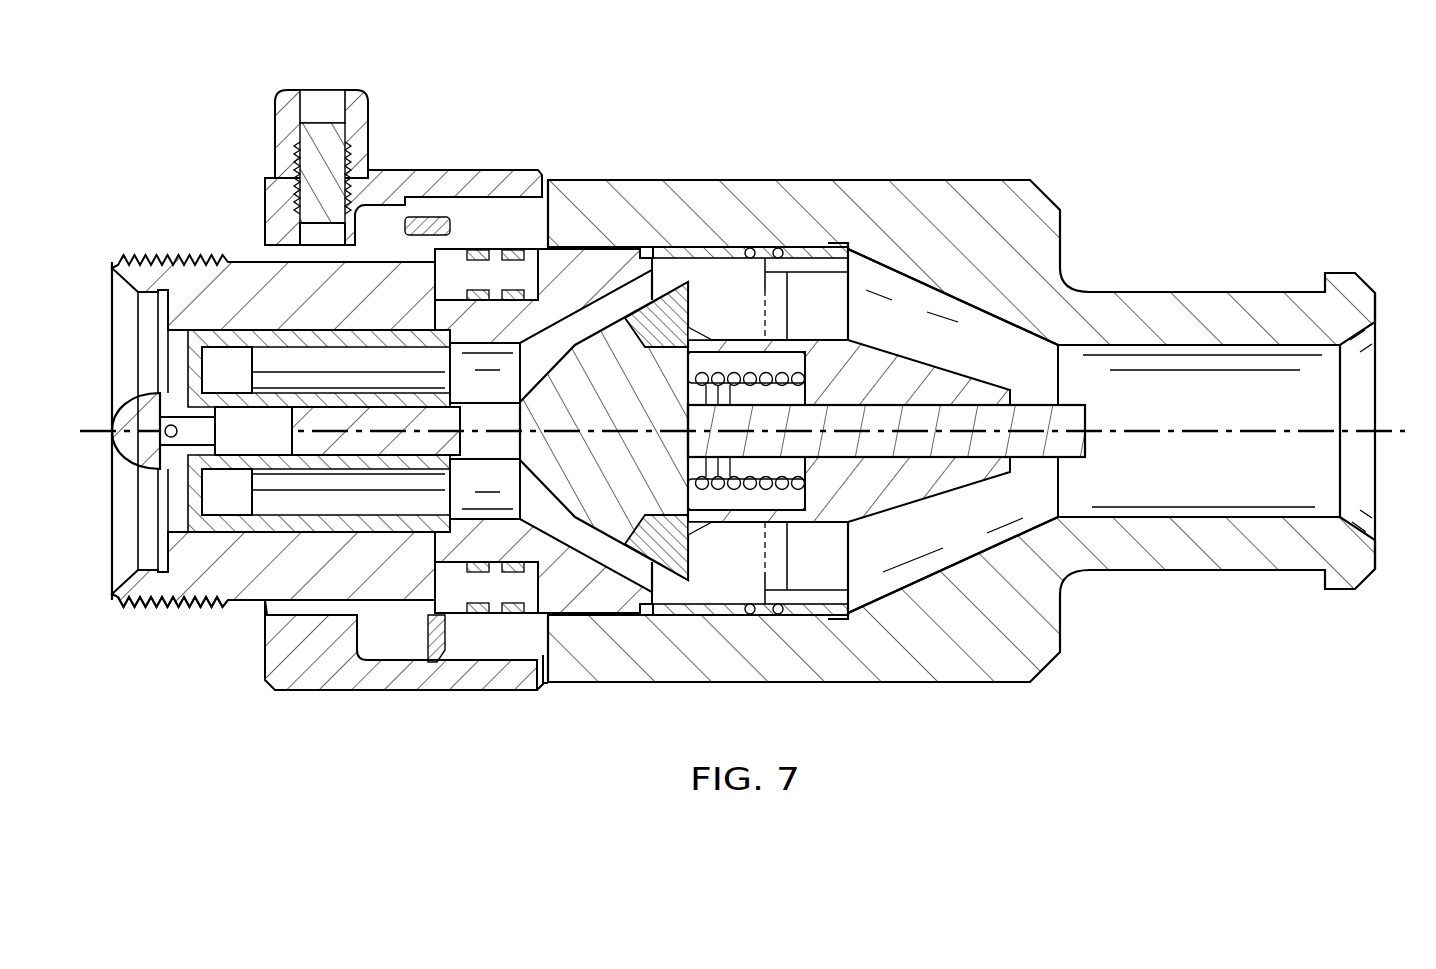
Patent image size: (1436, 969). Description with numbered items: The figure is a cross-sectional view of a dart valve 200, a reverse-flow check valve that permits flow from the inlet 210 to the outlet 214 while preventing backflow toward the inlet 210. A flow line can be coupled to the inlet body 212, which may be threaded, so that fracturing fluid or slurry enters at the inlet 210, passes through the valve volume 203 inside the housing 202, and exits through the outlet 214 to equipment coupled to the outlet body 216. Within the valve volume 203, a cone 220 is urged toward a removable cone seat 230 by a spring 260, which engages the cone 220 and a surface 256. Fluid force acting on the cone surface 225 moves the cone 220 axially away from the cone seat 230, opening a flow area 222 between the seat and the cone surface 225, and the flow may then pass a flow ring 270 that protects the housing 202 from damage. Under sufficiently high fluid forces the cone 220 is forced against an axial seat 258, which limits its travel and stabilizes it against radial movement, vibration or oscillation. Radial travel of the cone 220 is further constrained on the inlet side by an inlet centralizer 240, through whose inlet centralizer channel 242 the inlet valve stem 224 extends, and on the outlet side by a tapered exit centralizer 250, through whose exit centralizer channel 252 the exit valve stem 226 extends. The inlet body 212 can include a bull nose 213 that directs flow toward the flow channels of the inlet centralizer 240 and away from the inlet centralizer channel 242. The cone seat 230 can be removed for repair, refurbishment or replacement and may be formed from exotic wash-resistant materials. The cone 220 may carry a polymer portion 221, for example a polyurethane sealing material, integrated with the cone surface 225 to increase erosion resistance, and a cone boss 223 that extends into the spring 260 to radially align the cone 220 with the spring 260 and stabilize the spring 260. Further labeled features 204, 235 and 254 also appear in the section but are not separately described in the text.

The dart valve 200 is at (887, 95).
The housing 202 is at (989, 186).
The valve volume 203 is at (874, 578).
The locking bolt bar 204 is at (431, 185).
The inlet 210 is at (98, 274).
The inlet body 212 is at (160, 613).
The bull nose 213 is at (113, 396).
The outlet 214 is at (1408, 330).
The outlet body 216 is at (1270, 292).
The cone 220 is at (617, 333).
The polymer portion 221 is at (666, 300).
The flow area 222 is at (620, 563).
The cone boss 223 is at (700, 592).
The inlet valve stem 224 is at (308, 448).
The cone surface 225 is at (572, 518).
The exit valve stem 226 is at (1022, 450).
The cone seat 230 is at (560, 252).
The lower shim ring 235 is at (660, 612).
The inlet centralizer 240 is at (255, 330).
The inlet centralizer channel 242 is at (222, 336).
The exit centralizer 250 is at (882, 362).
The exit centralizer channel 252 is at (917, 463).
The piston taper 254 is at (958, 373).
The surface 256 is at (846, 520).
The axial seat 258 is at (700, 333).
The spring 260 is at (730, 485).
The flow ring 270 is at (740, 252).